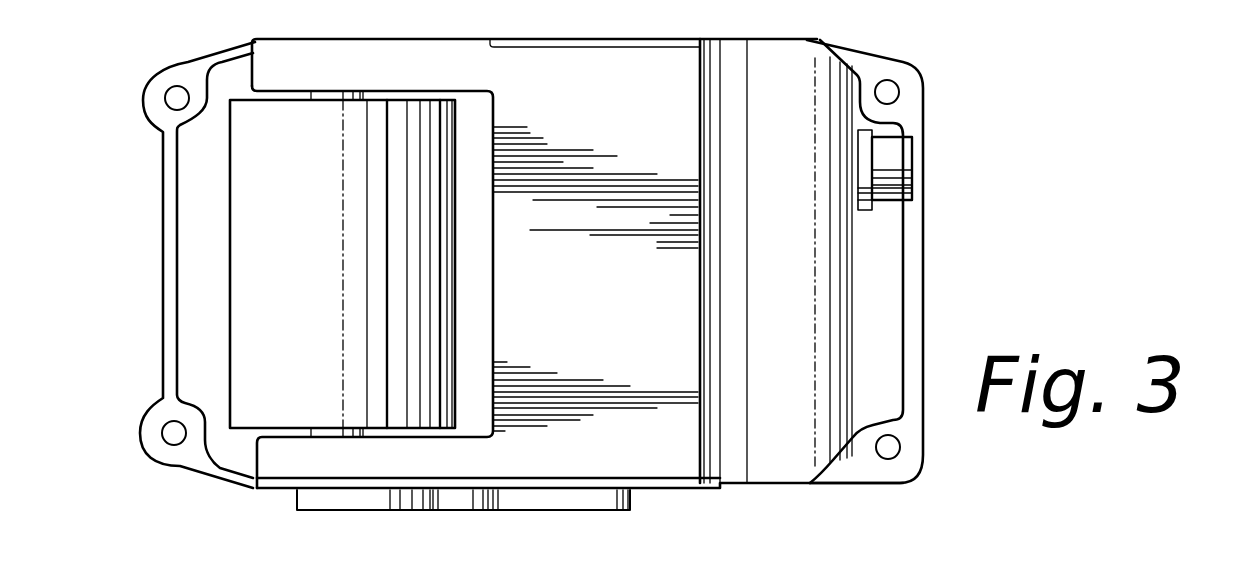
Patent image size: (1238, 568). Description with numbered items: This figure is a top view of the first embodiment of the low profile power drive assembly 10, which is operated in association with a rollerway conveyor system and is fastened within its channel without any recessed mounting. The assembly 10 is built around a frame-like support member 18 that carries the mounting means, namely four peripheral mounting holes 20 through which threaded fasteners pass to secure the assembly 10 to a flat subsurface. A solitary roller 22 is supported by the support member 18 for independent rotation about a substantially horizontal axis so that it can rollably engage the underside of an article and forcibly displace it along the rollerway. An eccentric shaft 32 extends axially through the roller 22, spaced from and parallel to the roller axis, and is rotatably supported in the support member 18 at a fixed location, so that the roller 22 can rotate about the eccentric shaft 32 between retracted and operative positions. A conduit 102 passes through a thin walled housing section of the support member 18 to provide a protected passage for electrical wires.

The low profile power drive assembly 10 is at (953, 150).
The support member 18 is at (213, 54).
The mounting holes 20 is at (172, 101).
The roller 22 is at (233, 252).
The eccentric shaft 32 is at (320, 432).
The conduit 102 is at (893, 158).